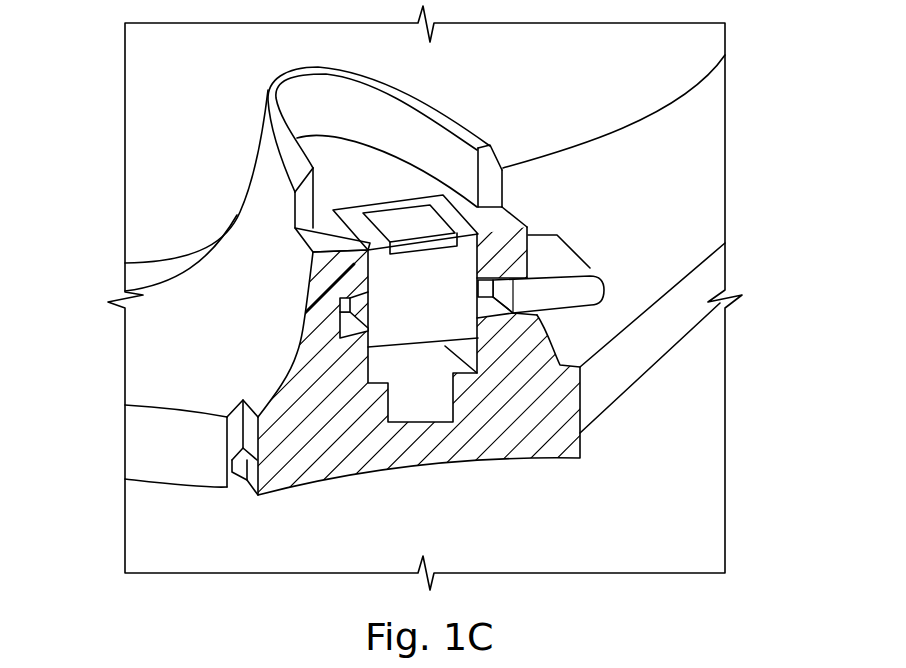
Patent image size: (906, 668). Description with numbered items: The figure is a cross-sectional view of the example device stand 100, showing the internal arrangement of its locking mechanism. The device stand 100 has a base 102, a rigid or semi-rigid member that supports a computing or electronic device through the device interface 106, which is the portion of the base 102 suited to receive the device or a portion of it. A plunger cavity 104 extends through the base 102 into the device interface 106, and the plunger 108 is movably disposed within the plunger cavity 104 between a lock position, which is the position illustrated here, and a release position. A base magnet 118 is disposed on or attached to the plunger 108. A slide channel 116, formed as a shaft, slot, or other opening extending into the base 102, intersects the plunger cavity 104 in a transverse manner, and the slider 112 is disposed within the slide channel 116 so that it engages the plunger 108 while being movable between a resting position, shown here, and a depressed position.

The device stand 100 is at (755, 415).
The base 102 is at (203, 340).
The plunger cavity 104 is at (425, 375).
The device interface 106 is at (503, 208).
The plunger 108 is at (363, 232).
The slider 112 is at (597, 292).
The slide channel 116 is at (495, 307).
The base magnet 118 is at (430, 222).